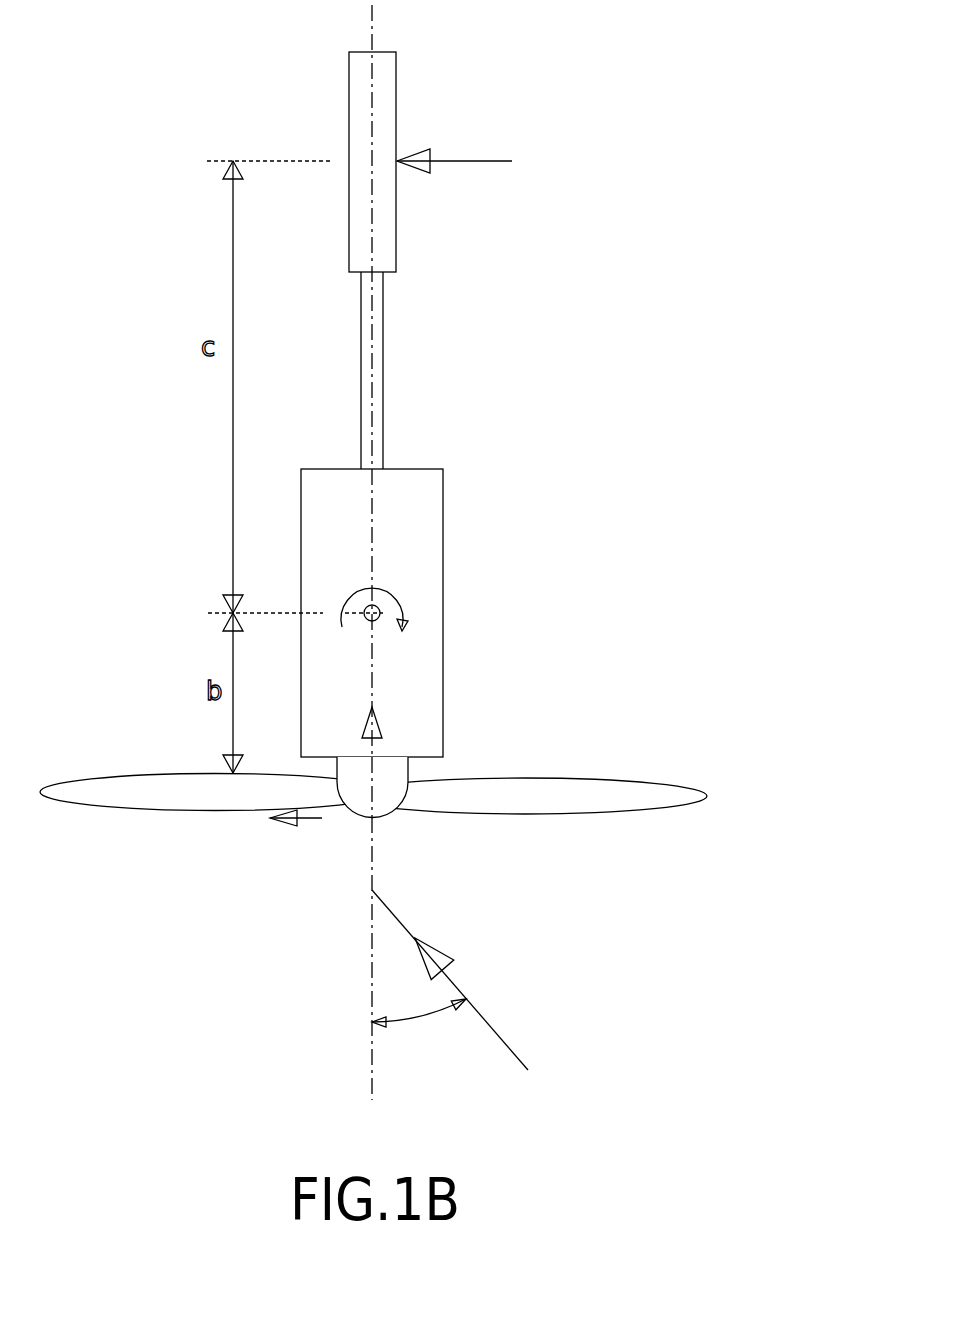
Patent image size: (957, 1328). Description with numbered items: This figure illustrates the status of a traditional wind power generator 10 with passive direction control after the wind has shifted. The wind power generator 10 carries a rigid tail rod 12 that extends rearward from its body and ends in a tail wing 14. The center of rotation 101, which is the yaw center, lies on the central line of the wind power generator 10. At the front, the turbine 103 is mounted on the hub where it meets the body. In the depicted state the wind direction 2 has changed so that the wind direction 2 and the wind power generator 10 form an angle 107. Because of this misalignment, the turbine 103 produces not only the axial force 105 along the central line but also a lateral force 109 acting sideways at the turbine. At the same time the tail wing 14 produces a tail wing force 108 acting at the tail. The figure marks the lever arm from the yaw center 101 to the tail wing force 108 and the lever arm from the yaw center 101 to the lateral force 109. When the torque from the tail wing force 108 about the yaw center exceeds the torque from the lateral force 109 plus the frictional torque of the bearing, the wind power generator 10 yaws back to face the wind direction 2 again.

The tail wing force 108 is at (455, 161).
The tail wing 14 is at (396, 208).
The rigid tail rod 12 is at (383, 370).
The wind power generator 10 is at (443, 607).
The center of rotation 101 is at (372, 612).
The turbine 103 is at (677, 783).
The axial force 105 is at (372, 748).
The lateral force 109 is at (320, 819).
The wind direction 2 is at (508, 1042).
The angle 107 is at (425, 1025).